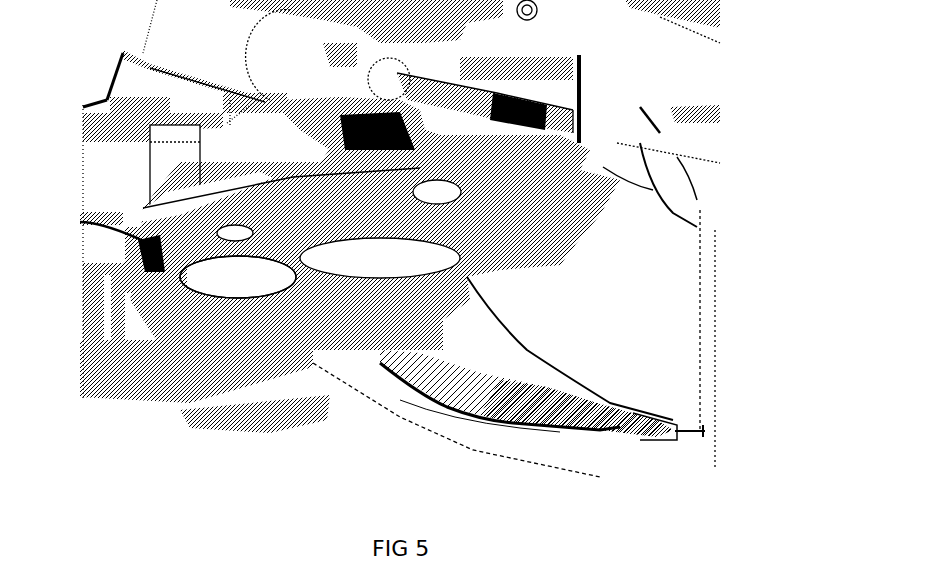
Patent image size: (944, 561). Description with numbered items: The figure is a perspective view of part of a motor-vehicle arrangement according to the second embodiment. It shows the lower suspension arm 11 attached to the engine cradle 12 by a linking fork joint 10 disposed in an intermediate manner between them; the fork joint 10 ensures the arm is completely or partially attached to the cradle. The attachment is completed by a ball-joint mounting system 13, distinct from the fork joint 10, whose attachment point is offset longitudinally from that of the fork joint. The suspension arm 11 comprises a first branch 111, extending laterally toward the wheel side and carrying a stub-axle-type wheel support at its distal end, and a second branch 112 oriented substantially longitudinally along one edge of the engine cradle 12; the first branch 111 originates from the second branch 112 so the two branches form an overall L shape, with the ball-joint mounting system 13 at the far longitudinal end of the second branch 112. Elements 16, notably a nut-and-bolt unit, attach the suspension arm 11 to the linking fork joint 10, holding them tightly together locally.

The linking fork joint 10 is at (170, 234).
The suspension arm 11 is at (283, 329).
The engine cradle 12 is at (76, 351).
The ball-joint mounting system 13 is at (528, 150).
The elements for attaching the suspension arm to the linking fork joint 16 is at (225, 290).
The first branch 111 is at (417, 408).
The second branch 112 is at (500, 240).